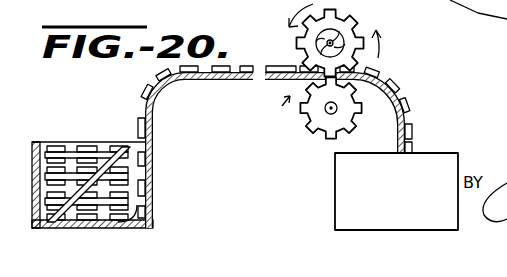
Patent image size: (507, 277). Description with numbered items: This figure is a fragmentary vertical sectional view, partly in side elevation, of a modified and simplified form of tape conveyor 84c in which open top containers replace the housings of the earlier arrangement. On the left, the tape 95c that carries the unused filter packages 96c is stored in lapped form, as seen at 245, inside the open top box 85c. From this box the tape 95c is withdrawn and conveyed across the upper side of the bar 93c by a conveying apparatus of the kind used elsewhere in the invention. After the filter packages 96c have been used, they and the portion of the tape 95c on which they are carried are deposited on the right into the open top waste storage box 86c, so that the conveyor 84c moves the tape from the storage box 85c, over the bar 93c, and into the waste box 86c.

The lapped form 245 is at (60, 142).
The tape conveyor 84c is at (225, 91).
The open top container 85c is at (151, 203).
The open top waste storage box 86c is at (346, 197).
The bar 93c is at (242, 72).
The tape 95c is at (140, 162).
The filter packages 96c is at (143, 94).